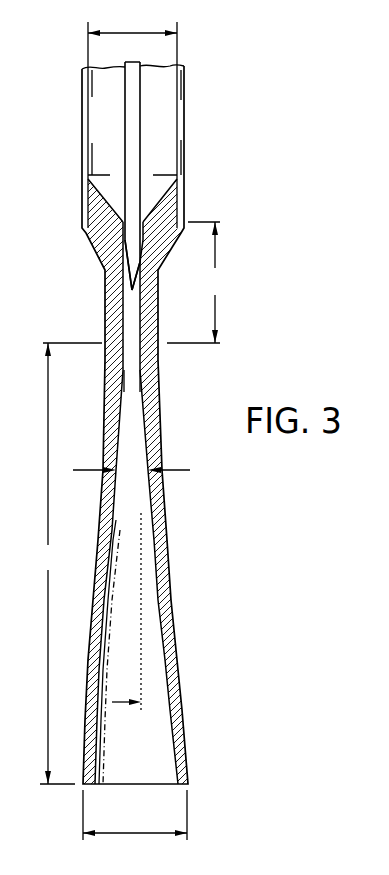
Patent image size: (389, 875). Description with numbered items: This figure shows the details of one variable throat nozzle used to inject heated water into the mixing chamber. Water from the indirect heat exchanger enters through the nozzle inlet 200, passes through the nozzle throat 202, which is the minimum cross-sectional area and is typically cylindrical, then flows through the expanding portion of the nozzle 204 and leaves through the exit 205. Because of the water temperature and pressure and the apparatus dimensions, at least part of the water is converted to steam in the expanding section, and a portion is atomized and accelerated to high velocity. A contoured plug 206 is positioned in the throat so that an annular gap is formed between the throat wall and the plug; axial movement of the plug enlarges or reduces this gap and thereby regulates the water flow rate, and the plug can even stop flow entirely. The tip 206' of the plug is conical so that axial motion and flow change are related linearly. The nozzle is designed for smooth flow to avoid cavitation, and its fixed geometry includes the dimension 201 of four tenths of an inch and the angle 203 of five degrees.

The nozzle inlet 200 is at (132, 45).
The nozzle dimension 201 is at (131, 484).
The nozzle throat 202 is at (207, 282).
The nozzle dimension 203 is at (186, 700).
The expanding portion of the nozzle 204 is at (66, 563).
The nozzle exit 205 is at (135, 815).
The contoured plug 206 is at (114, 176).
The plug tip 206' is at (90, 265).